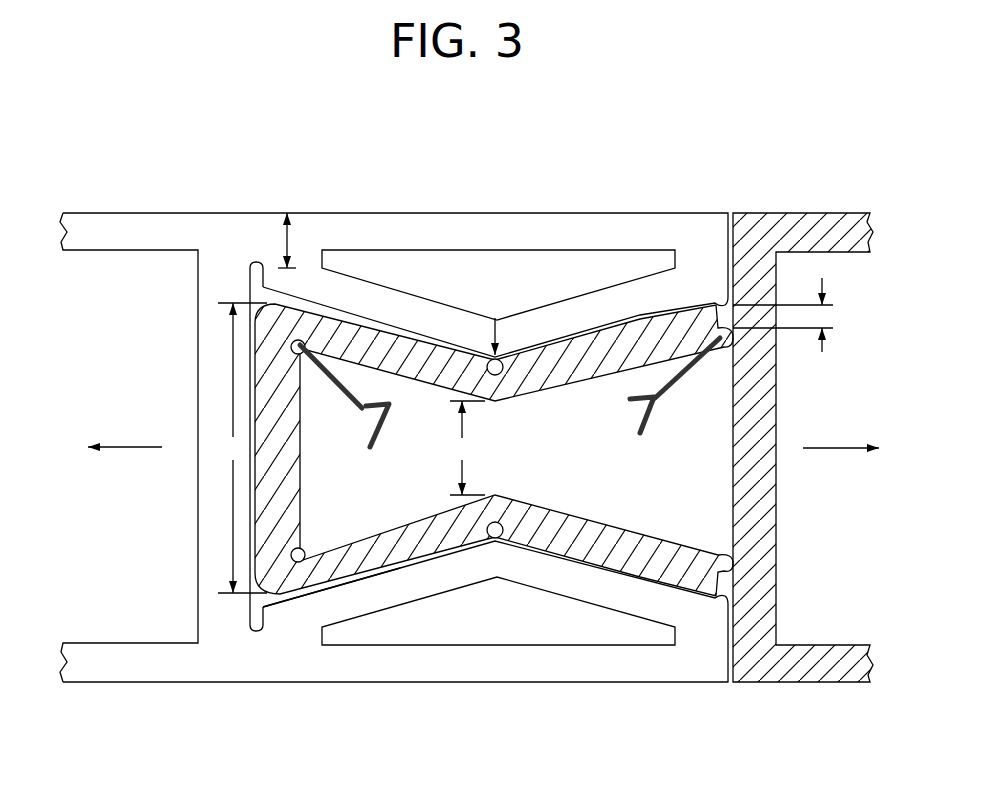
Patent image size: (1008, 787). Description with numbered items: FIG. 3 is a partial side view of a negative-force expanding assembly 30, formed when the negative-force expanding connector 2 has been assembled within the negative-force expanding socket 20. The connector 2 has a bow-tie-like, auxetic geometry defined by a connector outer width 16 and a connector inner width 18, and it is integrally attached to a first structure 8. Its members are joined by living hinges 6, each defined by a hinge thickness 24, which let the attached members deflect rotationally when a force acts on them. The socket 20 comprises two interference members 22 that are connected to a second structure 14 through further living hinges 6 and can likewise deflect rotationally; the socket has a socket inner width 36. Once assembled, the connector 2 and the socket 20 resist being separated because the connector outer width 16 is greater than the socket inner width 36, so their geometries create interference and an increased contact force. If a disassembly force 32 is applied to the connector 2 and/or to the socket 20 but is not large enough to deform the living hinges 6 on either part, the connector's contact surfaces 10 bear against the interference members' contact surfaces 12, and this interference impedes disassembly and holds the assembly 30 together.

The negative-force expanding connector 2 is at (574, 488).
The living hinges 6 is at (265, 208).
The first structure 8 is at (847, 262).
The connector's contact surfaces 10 is at (369, 573).
The interference members' contact surfaces 12 is at (348, 588).
The second structure 14 is at (118, 266).
The connector outer width 16 is at (241, 448).
The connector inner width 18 is at (466, 448).
The negative-force expanding socket 20 is at (596, 314).
The interference members 22 is at (543, 263).
The hinge thickness 24 is at (288, 238).
The negative-force expanding assembly 30 is at (497, 152).
The disassembly force 32 is at (483, 465).
The socket inner width 36 is at (515, 336).